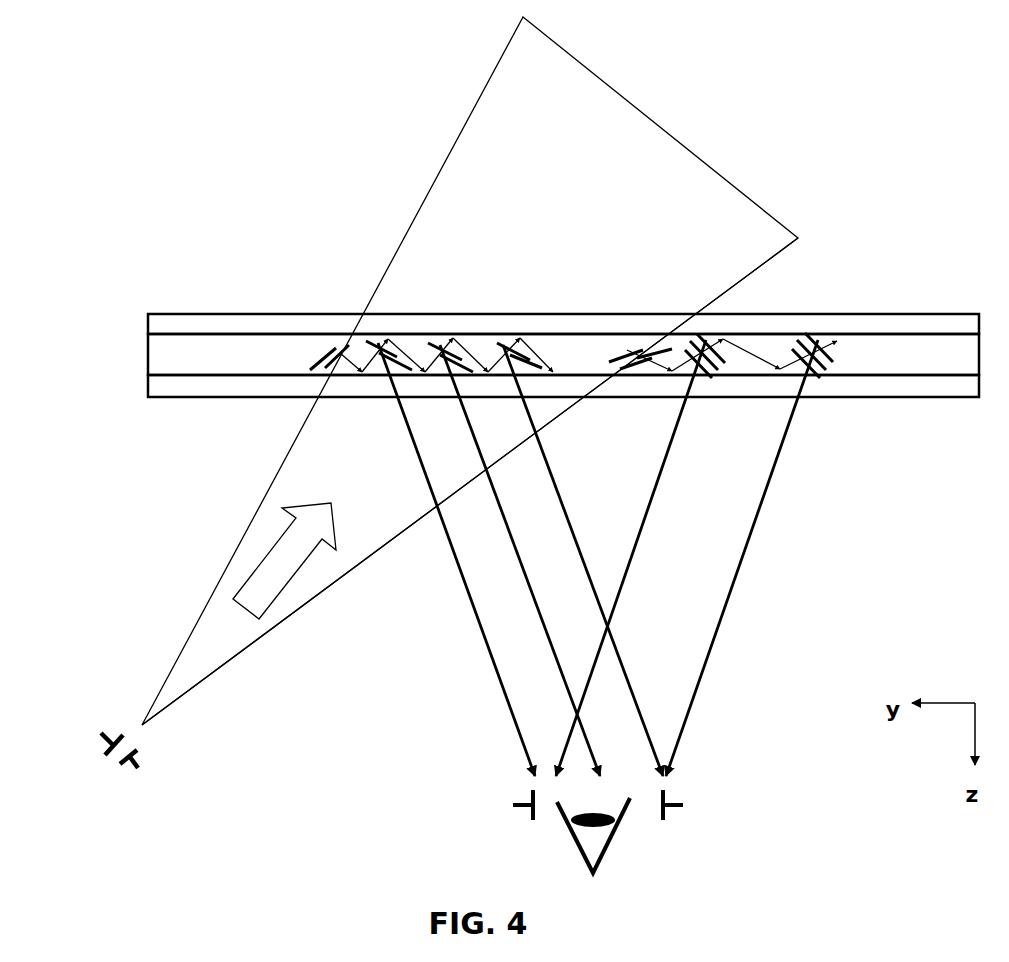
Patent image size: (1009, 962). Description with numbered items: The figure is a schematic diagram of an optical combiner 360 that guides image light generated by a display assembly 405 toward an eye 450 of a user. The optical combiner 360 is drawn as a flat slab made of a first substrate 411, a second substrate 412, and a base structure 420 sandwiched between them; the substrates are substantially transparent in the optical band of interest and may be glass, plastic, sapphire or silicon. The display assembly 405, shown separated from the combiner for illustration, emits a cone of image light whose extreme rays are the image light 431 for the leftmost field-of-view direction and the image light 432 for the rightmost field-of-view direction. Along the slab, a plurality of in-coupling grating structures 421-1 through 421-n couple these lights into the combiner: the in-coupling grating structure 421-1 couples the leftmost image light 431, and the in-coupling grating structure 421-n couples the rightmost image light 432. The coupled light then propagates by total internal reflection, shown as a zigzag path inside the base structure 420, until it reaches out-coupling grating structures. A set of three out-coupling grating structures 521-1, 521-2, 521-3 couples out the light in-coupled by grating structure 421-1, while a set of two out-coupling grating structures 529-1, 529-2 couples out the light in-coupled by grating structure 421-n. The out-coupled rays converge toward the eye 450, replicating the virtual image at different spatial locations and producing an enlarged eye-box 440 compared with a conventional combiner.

The optical combiner 360 is at (250, 160).
The display assembly 405 is at (122, 765).
The first substrate 411 is at (148, 327).
The second substrate 412 is at (152, 386).
The base structure 420 is at (148, 353).
The first grating structure 421-1 is at (335, 343).
The first grating structure 421-n is at (622, 350).
The image light 431 is at (226, 571).
The image light 432 is at (290, 617).
The eye-box 440 is at (513, 805).
The eye 450 is at (615, 822).
The out-coupling grating structure 521-1 is at (382, 336).
The out-coupling grating structure 521-2 is at (430, 340).
The out-coupling grating structure 521-3 is at (512, 343).
The out-coupling grating structure 529-1 is at (700, 336).
The out-coupling grating structure 529-2 is at (805, 336).